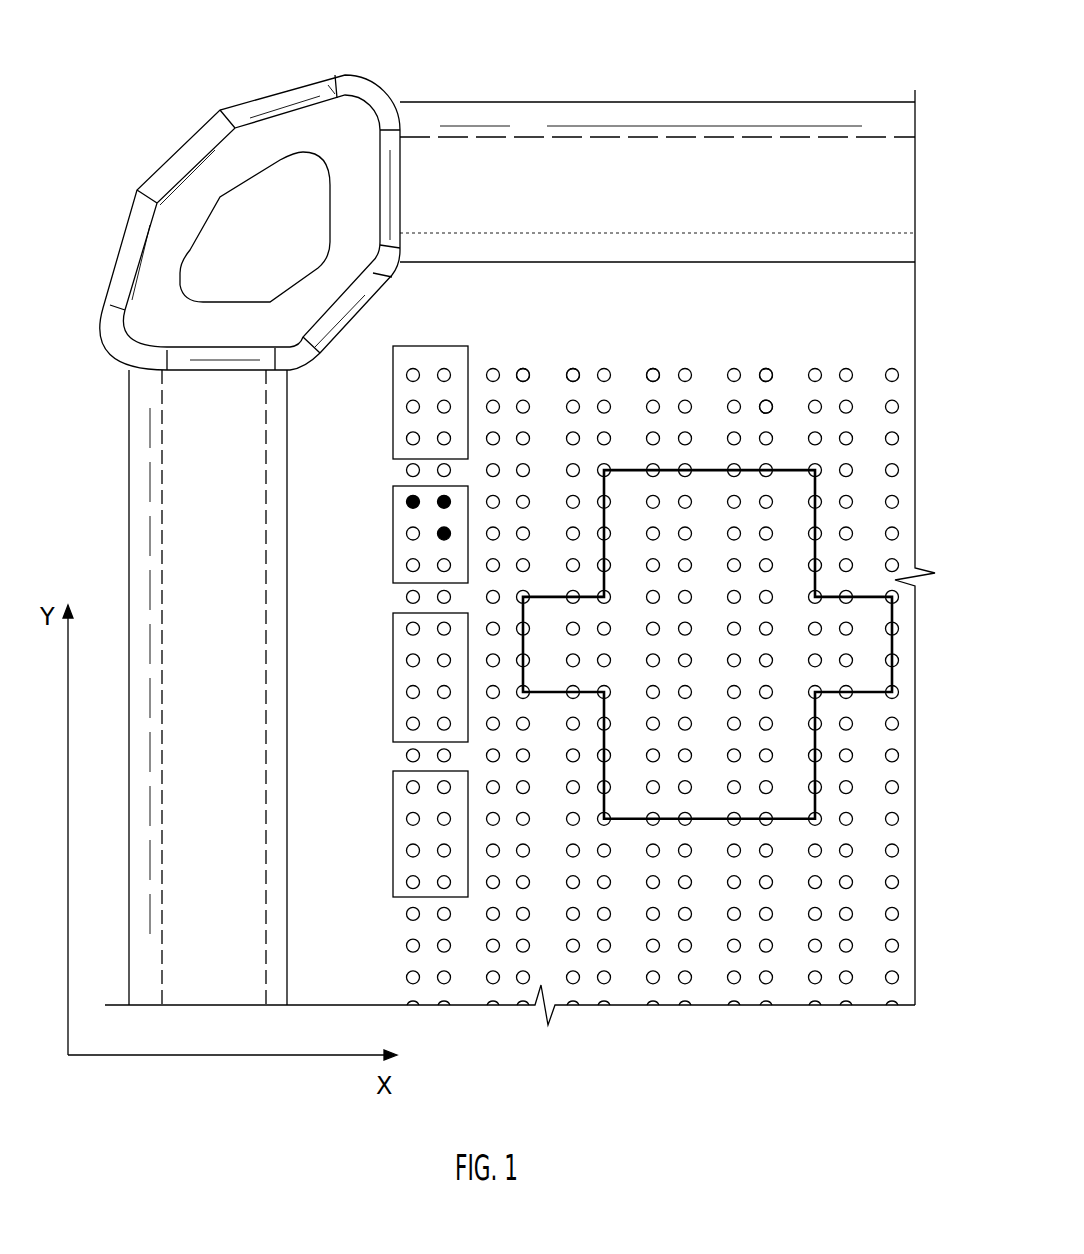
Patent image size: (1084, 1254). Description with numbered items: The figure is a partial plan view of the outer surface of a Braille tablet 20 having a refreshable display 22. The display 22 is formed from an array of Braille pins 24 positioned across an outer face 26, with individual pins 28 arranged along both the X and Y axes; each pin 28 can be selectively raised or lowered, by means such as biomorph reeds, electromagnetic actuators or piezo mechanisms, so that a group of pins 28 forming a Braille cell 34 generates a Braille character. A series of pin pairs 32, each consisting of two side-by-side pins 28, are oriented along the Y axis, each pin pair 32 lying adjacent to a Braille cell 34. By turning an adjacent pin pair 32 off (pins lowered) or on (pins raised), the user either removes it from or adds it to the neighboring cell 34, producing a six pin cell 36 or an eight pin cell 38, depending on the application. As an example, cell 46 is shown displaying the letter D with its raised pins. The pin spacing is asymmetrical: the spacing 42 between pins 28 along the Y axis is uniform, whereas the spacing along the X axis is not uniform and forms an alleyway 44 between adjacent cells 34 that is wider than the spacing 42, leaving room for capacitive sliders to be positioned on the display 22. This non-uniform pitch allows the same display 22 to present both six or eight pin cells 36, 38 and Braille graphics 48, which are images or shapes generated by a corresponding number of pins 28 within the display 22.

The Braille tablet 20 is at (691, 84).
The refreshable display 22 is at (895, 325).
The array of Braille pins 24 is at (801, 338).
The outer face 26 is at (518, 304).
The pin 28 is at (655, 368).
The pin pair 32 is at (403, 472).
The Braille cell 34 is at (392, 383).
The six pin cell 36 is at (392, 428).
The eight pin cell 38 is at (392, 878).
The Y-axis pin spacing 42 is at (772, 377).
The alleyway 44 is at (572, 368).
The cell displaying letter D 46 is at (392, 528).
The Braille graphics 48 is at (818, 515).